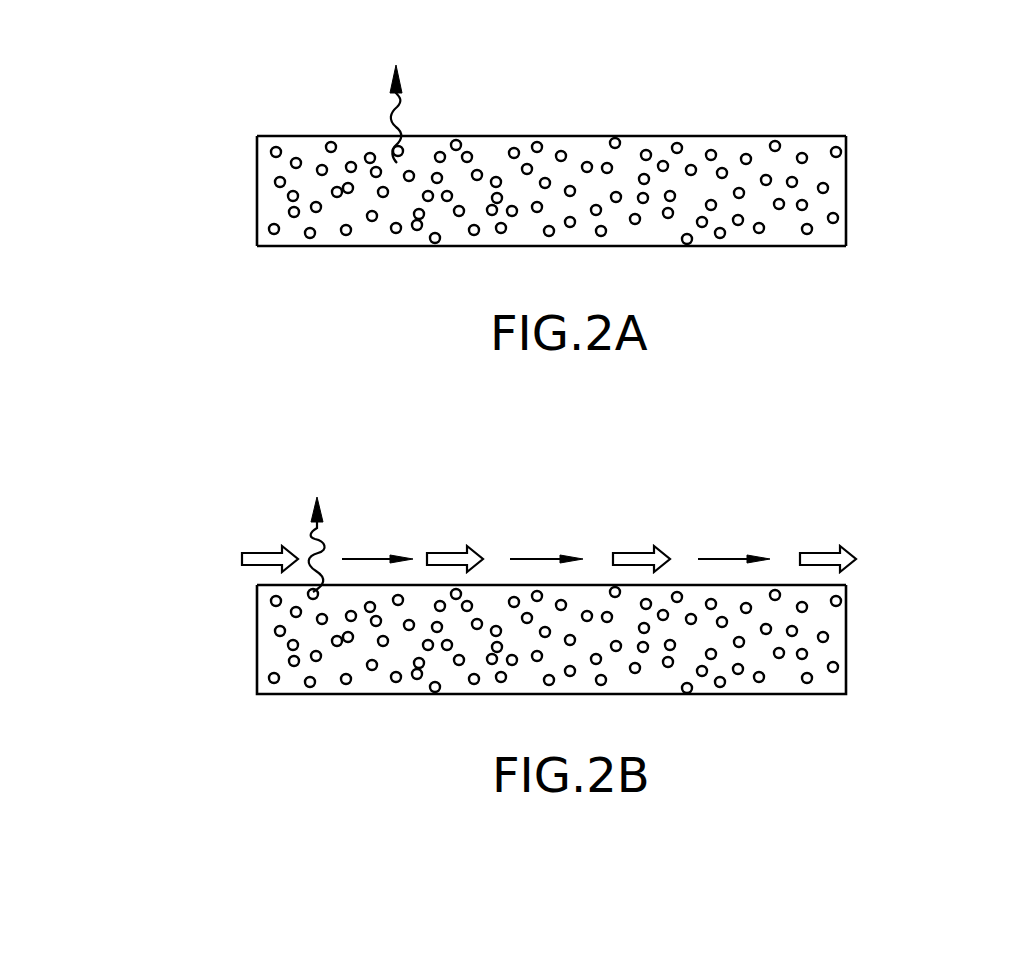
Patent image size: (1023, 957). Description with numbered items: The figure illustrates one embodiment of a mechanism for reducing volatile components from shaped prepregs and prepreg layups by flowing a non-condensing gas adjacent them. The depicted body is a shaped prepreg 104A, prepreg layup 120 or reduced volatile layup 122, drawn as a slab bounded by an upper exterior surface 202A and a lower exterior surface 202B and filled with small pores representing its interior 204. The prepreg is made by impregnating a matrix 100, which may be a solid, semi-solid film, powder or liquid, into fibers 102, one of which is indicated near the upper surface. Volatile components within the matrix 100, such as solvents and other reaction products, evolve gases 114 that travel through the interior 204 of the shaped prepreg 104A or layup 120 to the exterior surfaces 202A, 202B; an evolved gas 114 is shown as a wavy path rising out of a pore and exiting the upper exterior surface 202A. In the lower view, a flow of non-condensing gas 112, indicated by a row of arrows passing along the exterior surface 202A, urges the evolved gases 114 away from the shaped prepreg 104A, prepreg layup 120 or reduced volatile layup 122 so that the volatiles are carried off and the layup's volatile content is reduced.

In FIG. 2A, the matrix 100 is at (594, 183).
In FIG. 2A, the fibers 102 is at (300, 108).
In FIG. 2A, the shaped prepreg 104A is at (490, 183).
In FIG. 2B, the shaped prepreg 104A is at (497, 600).
In FIG. 2B, the flow of non-condensing gas 112 is at (253, 552).
In FIG. 2A, the evolved gases 114 is at (398, 112).
In FIG. 2B, the evolved gases 114 is at (320, 548).
In FIG. 2A, the prepreg layup 120 is at (490, 183).
In FIG. 2B, the prepreg layup 120 is at (497, 600).
In FIG. 2A, the reduced volatile layup 122 is at (490, 183).
In FIG. 2B, the reduced volatile layup 122 is at (497, 600).
In FIG. 2A, the exterior surface 202A is at (807, 137).
In FIG. 2B, the exterior surface 202A is at (838, 584).
In FIG. 2A, the exterior surface 202B is at (793, 245).
In FIG. 2A, the interior 204 is at (598, 154).
In FIG. 2B, the interior 204 is at (817, 648).